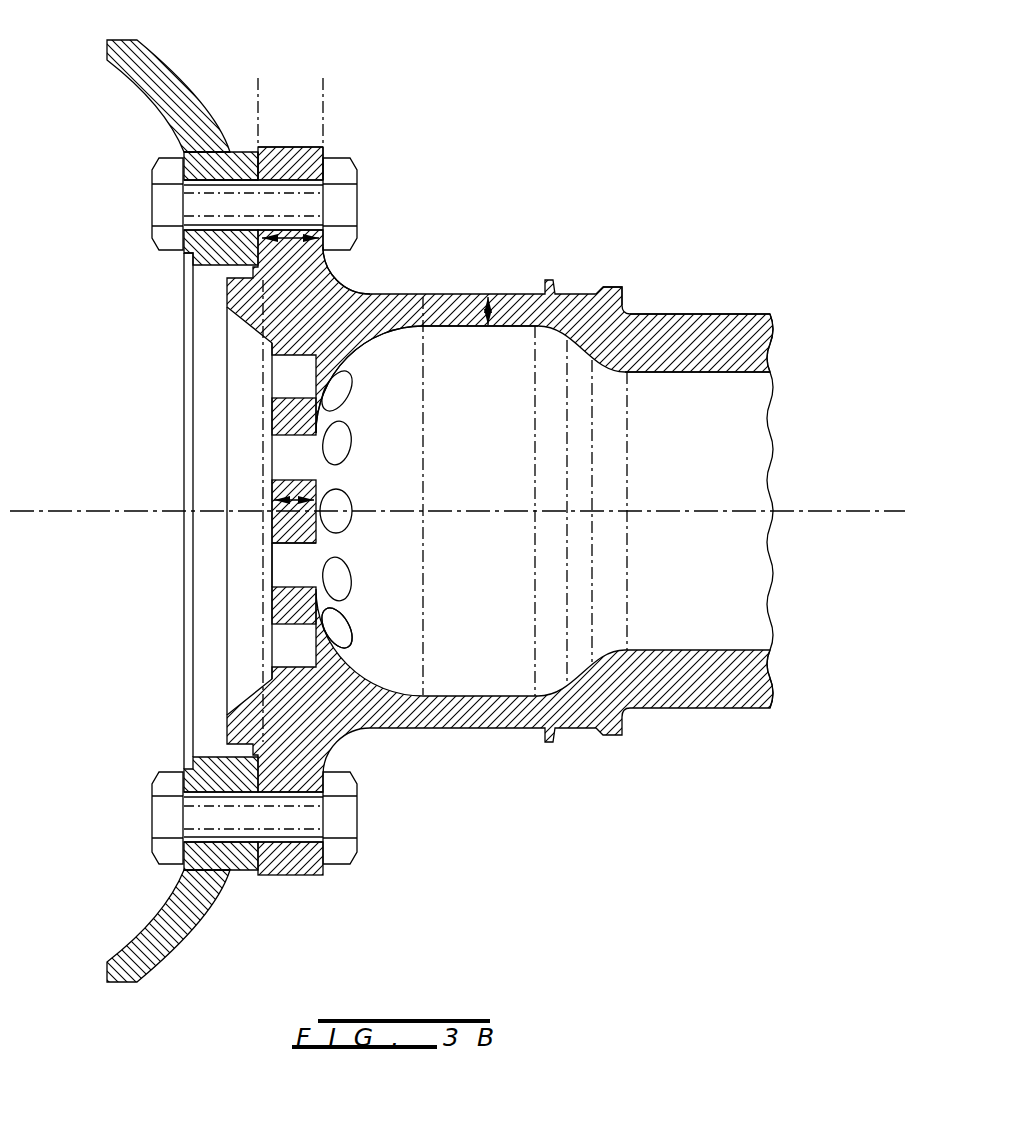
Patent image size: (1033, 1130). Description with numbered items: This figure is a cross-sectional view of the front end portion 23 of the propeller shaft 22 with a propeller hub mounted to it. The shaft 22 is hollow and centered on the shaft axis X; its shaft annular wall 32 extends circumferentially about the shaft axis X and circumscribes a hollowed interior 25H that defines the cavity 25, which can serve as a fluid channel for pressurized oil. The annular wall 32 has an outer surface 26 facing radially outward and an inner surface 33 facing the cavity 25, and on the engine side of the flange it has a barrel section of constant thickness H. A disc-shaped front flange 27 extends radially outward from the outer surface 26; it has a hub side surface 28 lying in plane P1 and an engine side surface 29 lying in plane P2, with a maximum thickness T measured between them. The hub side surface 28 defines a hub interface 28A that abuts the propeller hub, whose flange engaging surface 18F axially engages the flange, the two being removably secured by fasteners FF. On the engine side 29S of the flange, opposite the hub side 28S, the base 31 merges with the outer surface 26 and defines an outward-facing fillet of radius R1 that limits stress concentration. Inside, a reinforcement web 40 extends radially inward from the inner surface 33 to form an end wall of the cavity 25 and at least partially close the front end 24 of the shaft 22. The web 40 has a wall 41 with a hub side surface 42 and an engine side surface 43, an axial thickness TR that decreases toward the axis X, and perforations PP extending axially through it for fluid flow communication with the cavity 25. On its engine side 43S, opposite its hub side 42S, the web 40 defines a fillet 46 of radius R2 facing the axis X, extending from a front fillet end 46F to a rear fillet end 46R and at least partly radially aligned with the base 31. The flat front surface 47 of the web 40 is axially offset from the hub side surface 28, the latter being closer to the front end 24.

The propeller shaft 22 is at (705, 316).
The front end portion 23 is at (95, 99).
The front end 24 is at (227, 322).
The cavity 25 is at (514, 376).
The hollowed interior 25H is at (519, 426).
The outer surface 26 is at (743, 316).
The front flange 27 is at (255, 238).
The hub side surface 28 is at (258, 150).
The hub interface 28A is at (256, 168).
The hub side 28S is at (247, 184).
The engine side surface 29 is at (326, 152).
The engine side 29S is at (367, 163).
The base 31 is at (339, 246).
The shaft annular wall 32 is at (643, 333).
The inner surface 33 is at (660, 374).
The reinforcement web 40 is at (268, 390).
The wall 41 is at (292, 417).
The hub side surface 42 is at (273, 480).
The hub side 42S is at (253, 580).
The engine side surface 43 is at (325, 632).
The engine side 43S is at (360, 627).
The fillet 46 is at (394, 343).
The front fillet end 46F is at (319, 425).
The rear fillet end 46R is at (428, 331).
The front surface 47 is at (272, 608).
The flange engaging surface 18F is at (272, 147).
The fasteners FF is at (293, 197).
The plane P1 is at (258, 78).
The plane P2 is at (323, 78).
The thickness T is at (192, 259).
The axial thickness TR is at (270, 522).
The perforations PP is at (280, 562).
The thickness H is at (488, 296).
The radius R1 is at (368, 250).
The radius R2 is at (382, 345).
The shaft axis X is at (890, 510).